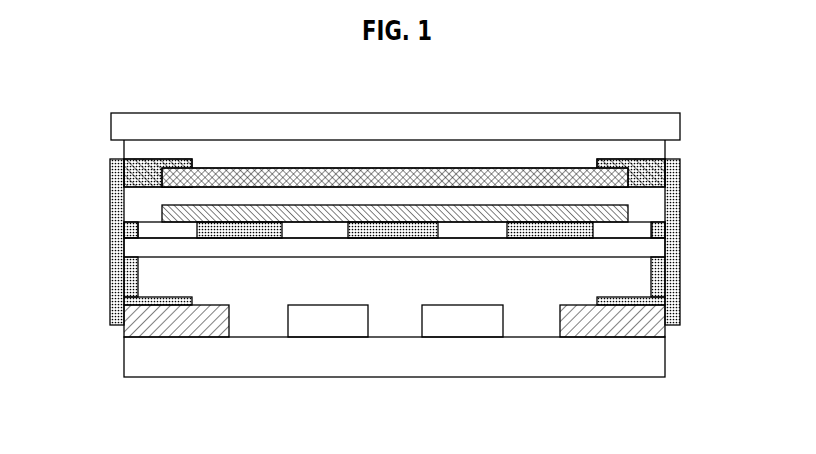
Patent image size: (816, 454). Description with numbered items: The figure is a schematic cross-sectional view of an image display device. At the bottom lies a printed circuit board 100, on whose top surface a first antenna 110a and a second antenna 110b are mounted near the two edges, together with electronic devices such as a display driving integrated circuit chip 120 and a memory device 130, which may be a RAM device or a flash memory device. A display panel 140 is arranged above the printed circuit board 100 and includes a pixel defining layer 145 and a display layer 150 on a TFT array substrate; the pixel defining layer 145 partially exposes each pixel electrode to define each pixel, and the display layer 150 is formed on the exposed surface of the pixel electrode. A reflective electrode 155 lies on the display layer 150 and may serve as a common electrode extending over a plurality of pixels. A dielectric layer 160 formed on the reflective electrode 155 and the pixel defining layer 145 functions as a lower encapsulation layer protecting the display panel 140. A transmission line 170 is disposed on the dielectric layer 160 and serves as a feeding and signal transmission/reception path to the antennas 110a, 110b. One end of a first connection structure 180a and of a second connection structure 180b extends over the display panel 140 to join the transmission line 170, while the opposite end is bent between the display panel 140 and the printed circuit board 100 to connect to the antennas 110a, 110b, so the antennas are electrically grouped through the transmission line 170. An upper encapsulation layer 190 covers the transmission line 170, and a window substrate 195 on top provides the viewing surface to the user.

The printed circuit board 100 is at (660, 355).
The first antenna 110a is at (177, 338).
The second antenna 110b is at (610, 338).
The display driving integrated circuit chip 120 is at (328, 332).
The memory device 130 is at (463, 330).
The display panel 140 is at (262, 252).
The pixel defining layer 145 is at (492, 237).
The display layer 150 is at (397, 233).
The reflective electrode 155 is at (225, 210).
The dielectric layer 160 is at (313, 195).
The transmission line 170 is at (452, 165).
The first connection structure 180a is at (110, 275).
The second connection structure 180b is at (680, 268).
The upper encapsulation layer 190 is at (508, 147).
The window substrate 195 is at (680, 125).